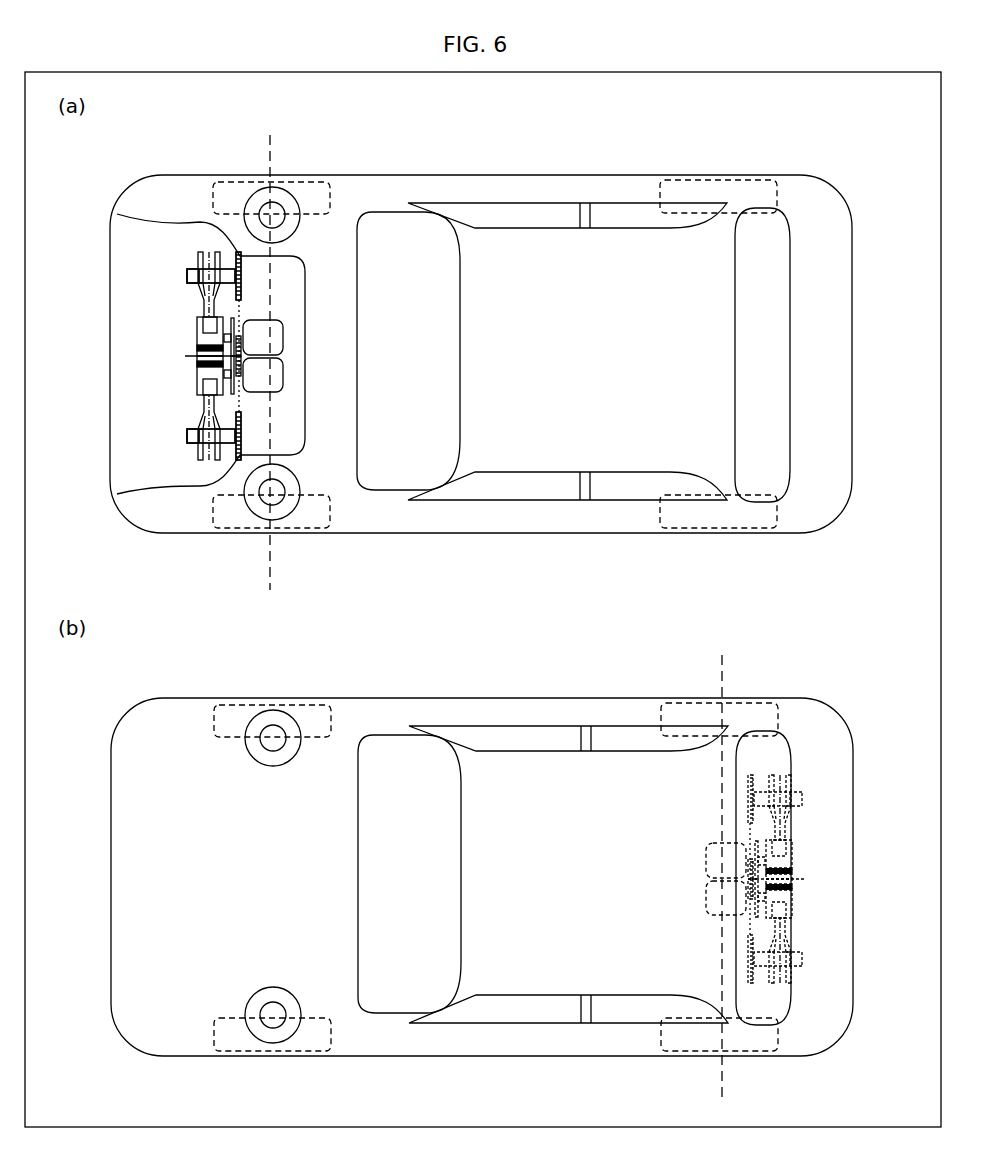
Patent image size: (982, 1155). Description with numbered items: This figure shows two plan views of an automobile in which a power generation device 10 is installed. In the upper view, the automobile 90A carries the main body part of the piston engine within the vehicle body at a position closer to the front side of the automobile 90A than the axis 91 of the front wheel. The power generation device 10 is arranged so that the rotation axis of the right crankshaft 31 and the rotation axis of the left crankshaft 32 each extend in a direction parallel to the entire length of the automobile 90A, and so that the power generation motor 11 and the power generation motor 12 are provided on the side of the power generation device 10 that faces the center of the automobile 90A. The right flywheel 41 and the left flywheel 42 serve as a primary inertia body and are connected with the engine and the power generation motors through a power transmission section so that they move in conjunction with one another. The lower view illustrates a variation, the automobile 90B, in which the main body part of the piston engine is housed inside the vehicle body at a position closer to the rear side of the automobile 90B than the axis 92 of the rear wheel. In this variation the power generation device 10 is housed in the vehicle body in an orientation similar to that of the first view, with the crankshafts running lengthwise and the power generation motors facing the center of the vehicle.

The power generation device 10 is at (178, 306).
The power generation motor 11 is at (255, 328).
The power generation motor 12 is at (258, 398).
The right crankshaft 31 is at (186, 275).
The left crankshaft 32 is at (186, 433).
The right flywheel 41 is at (238, 253).
The left flywheel 42 is at (238, 460).
The axis of a front wheel 91 is at (272, 150).
The axis of a rear wheel 92 is at (724, 672).
The automobile 90A is at (848, 147).
The automobile 90B is at (848, 679).